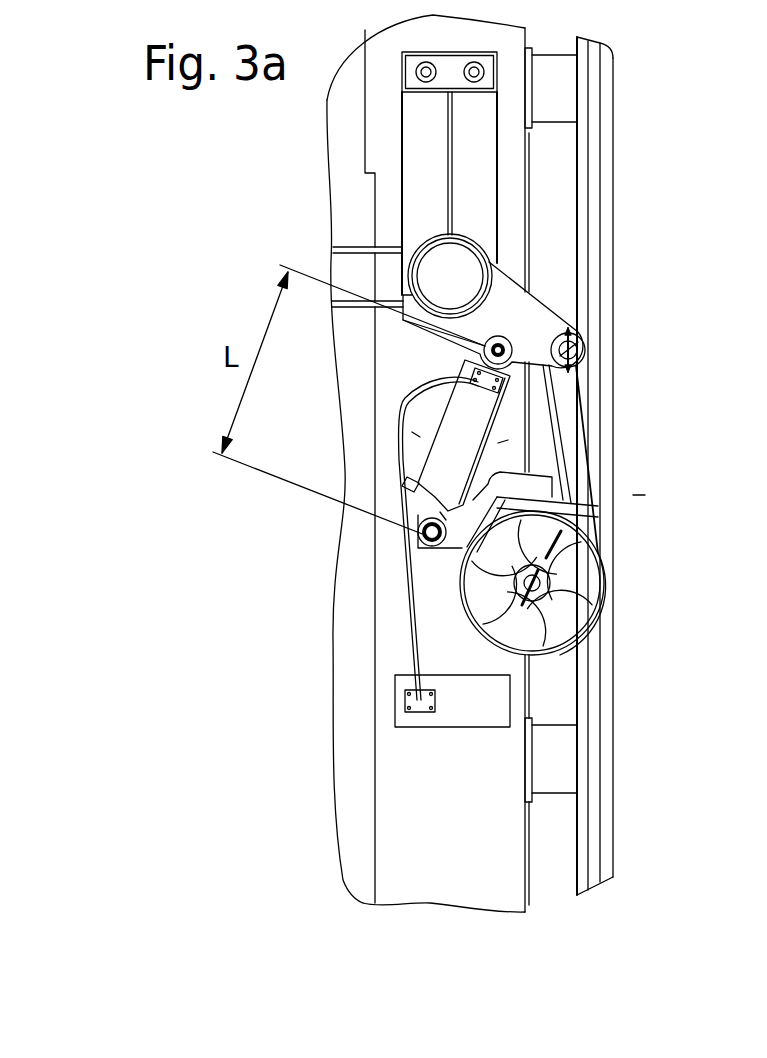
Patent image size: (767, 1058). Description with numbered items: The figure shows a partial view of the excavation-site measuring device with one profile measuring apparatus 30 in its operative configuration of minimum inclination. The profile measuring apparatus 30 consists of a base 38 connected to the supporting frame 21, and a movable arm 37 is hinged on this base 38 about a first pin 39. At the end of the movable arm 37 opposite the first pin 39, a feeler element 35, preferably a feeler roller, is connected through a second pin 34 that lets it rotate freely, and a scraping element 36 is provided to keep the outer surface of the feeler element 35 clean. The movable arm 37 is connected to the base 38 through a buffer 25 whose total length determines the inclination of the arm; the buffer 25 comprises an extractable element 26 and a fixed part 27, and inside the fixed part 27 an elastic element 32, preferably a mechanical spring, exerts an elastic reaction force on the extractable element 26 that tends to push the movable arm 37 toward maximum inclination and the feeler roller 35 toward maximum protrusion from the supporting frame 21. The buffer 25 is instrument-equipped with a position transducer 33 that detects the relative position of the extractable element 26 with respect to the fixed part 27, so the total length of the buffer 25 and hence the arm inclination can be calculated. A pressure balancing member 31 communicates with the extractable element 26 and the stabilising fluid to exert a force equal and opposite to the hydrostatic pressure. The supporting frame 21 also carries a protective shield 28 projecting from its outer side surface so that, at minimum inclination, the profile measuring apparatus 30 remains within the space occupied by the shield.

The supporting frame 21 is at (527, 168).
The protective shield 28 is at (615, 208).
The base 38 is at (520, 317).
The first pin 39 is at (587, 338).
The movable arm 37 is at (562, 388).
The elastic element 32 is at (473, 413).
The fixed part 27 is at (508, 440).
The buffer 25 is at (412, 432).
The position transducer 33 is at (416, 482).
The extractable element 26 is at (430, 510).
The profile measuring apparatus 30 is at (645, 495).
The scraping element 36 is at (585, 498).
The feeler element 35 is at (603, 568).
The second pin 34 is at (533, 583).
The pressure balancing member 31 is at (492, 700).